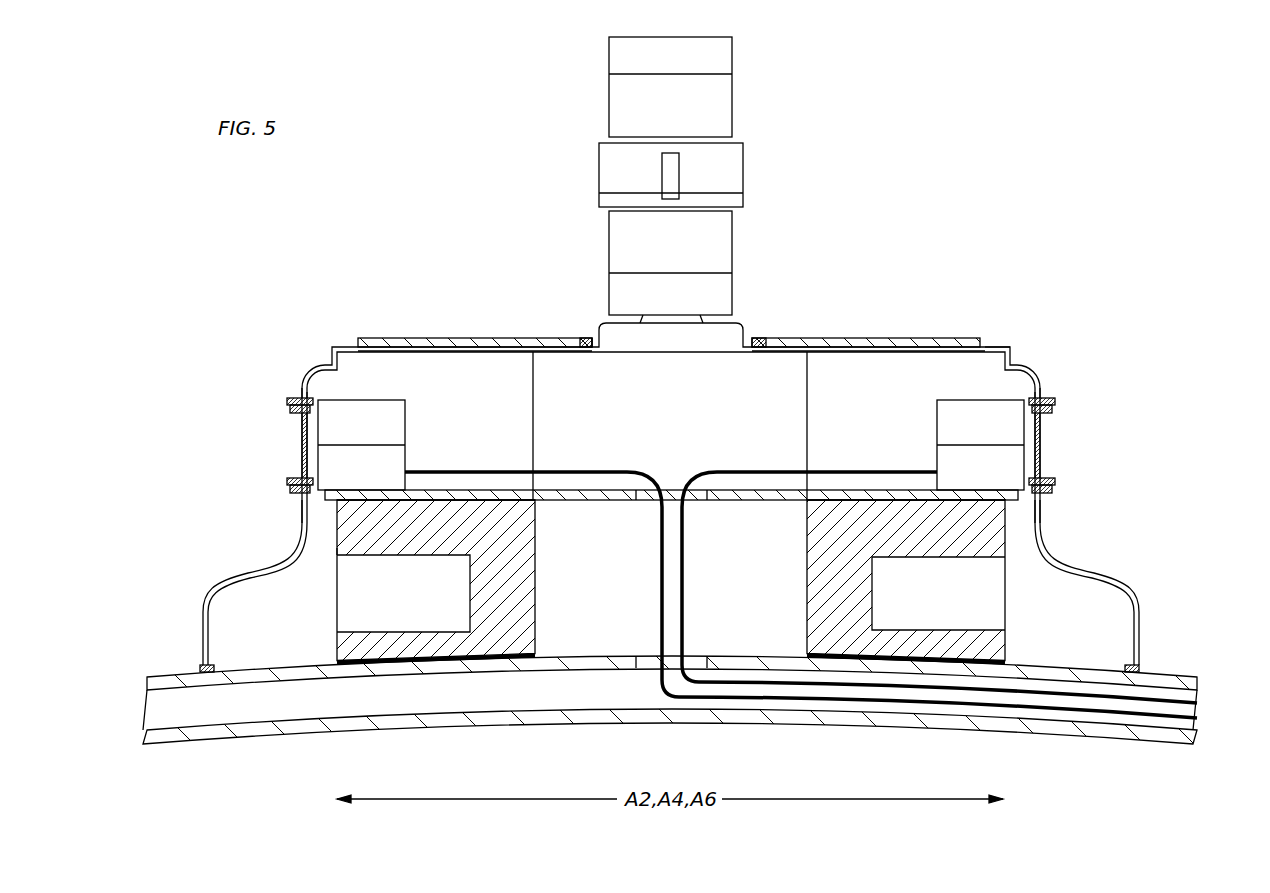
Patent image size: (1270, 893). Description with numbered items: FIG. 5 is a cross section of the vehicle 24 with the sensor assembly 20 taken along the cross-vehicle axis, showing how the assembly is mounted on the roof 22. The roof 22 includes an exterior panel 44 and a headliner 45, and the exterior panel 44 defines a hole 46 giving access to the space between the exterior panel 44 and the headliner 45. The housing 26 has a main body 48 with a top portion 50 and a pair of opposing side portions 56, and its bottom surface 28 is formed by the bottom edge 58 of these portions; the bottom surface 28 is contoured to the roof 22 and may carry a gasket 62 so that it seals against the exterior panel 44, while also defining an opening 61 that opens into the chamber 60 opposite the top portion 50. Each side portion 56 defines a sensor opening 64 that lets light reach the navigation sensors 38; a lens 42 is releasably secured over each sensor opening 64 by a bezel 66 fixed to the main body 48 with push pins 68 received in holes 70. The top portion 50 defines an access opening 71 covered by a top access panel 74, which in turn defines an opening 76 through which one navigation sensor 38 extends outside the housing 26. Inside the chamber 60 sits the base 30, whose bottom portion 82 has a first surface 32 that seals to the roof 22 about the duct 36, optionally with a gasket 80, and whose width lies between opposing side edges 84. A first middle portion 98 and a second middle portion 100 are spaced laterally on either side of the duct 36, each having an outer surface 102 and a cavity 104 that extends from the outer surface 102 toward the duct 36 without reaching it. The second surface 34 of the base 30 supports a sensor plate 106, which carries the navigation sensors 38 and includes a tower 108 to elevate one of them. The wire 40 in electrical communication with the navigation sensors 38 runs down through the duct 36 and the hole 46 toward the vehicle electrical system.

The sensor assembly 20 is at (1136, 327).
The roof 22 is at (1165, 678).
The vehicle 24 is at (1198, 695).
The housing 26 is at (1013, 353).
The bottom surface 28 is at (205, 680).
The base 30 is at (537, 583).
The first surface 32 is at (468, 664).
The second surface 34 is at (388, 500).
The duct 36 is at (717, 608).
The navigation sensor 38 is at (633, 243).
The wire 40 is at (591, 470).
The lens 42 is at (303, 433).
The exterior panel 44 is at (1148, 672).
The headliner 45 is at (585, 723).
The hole 46 is at (650, 662).
The main body 48 is at (1040, 529).
The top portion 50 is at (1005, 340).
The side portions 56 is at (304, 512).
The bottom edge 58 is at (203, 660).
The chamber 60 is at (1070, 618).
The opening 61 is at (235, 665).
The gasket 62 is at (199, 670).
The sensor opening 64 is at (318, 465).
The bezel 66 is at (301, 398).
The push pin 68 is at (288, 403).
The hole 70 is at (306, 387).
The access opening 71 is at (463, 351).
The top access panel 74 is at (432, 337).
The opening 76 is at (595, 336).
The gasket 80 is at (405, 666).
The bottom portion 82 is at (355, 665).
The side edges 84 is at (338, 661).
The first middle portion 98 is at (1007, 545).
The second middle portion 100 is at (337, 548).
The outer surface 102 is at (332, 523).
The cavity 104 is at (400, 606).
The sensor plate 106 is at (580, 502).
The tower 108 is at (780, 362).